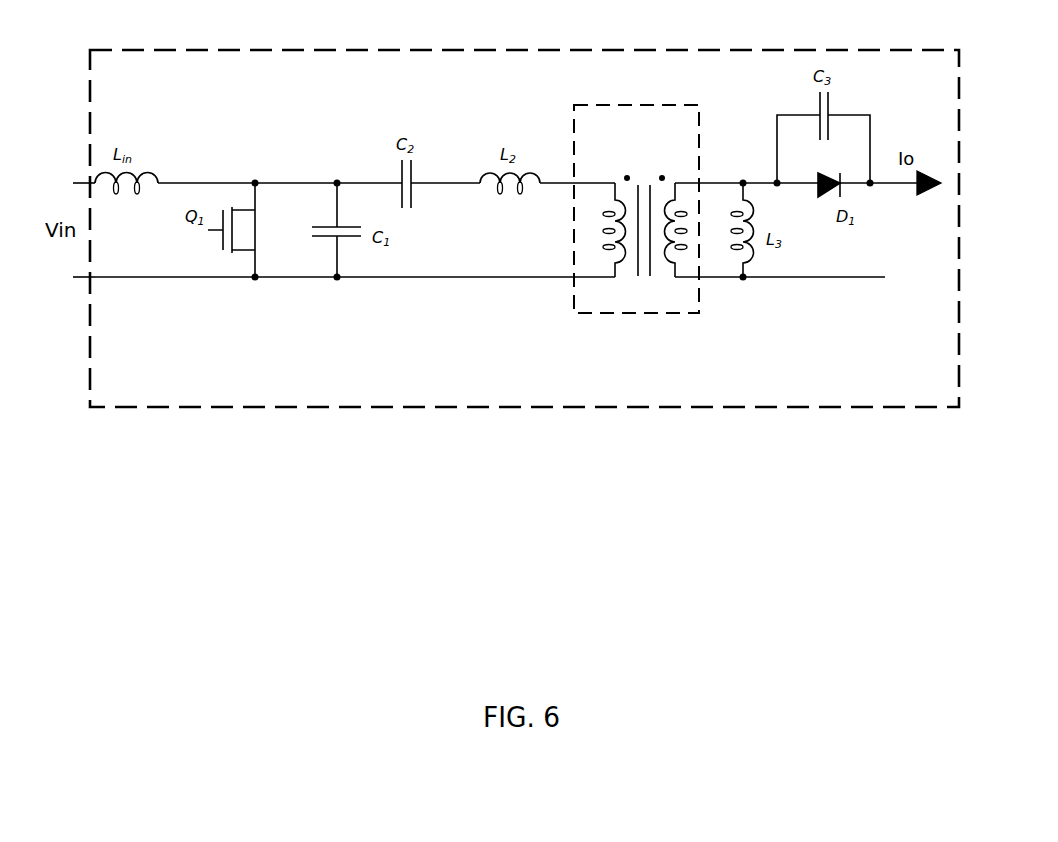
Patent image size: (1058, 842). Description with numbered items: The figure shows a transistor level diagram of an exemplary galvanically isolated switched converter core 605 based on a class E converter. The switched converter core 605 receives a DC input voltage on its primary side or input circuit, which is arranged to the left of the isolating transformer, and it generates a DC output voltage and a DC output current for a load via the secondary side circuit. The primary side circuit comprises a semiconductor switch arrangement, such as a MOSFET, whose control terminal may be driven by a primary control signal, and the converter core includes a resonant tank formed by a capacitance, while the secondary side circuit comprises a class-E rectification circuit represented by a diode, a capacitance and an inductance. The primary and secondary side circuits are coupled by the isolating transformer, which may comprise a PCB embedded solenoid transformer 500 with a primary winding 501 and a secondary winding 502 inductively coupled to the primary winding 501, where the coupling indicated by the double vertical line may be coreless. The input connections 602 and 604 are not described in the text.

The PCB embedded solenoid transformer 500 is at (621, 248).
The primary winding 501 is at (610, 236).
The secondary winding 502 is at (672, 240).
The positive input terminal 602 is at (80, 182).
The negative input terminal 604 is at (86, 282).
The switched converter core 605 is at (250, 413).